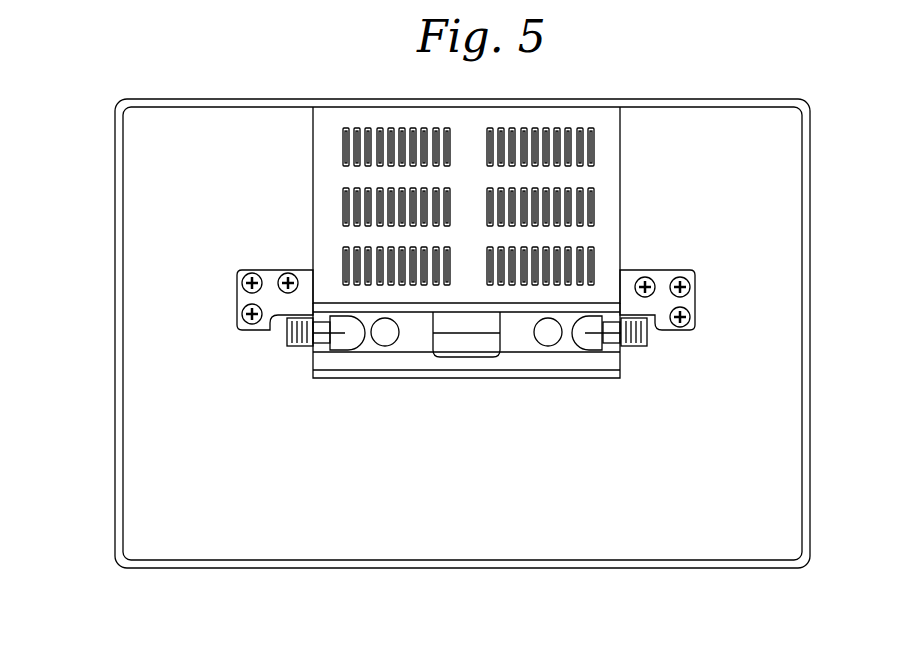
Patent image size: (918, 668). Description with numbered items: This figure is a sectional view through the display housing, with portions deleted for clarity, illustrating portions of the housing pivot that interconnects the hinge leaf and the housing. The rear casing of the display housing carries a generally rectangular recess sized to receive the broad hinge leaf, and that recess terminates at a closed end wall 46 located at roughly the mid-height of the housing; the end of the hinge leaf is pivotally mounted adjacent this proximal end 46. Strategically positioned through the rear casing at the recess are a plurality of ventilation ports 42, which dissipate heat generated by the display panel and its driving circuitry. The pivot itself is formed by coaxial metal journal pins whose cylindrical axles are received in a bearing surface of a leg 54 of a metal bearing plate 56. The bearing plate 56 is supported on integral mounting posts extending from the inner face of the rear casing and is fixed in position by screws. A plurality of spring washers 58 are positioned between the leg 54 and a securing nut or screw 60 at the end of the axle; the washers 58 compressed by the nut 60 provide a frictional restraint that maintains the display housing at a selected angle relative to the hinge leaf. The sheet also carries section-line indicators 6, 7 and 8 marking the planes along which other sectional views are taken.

The ventilation ports 42 is at (594, 270).
The closed end wall 46 is at (480, 379).
The leg 54 is at (630, 347).
The bearing plate 56 is at (262, 270).
The spring washers 58 is at (637, 347).
The securing nut or screw 60 is at (646, 340).
The section line 6- 6 is at (795, 480).
The section line 7- 7 is at (163, 633).
The section line 8- 8 is at (697, 333).